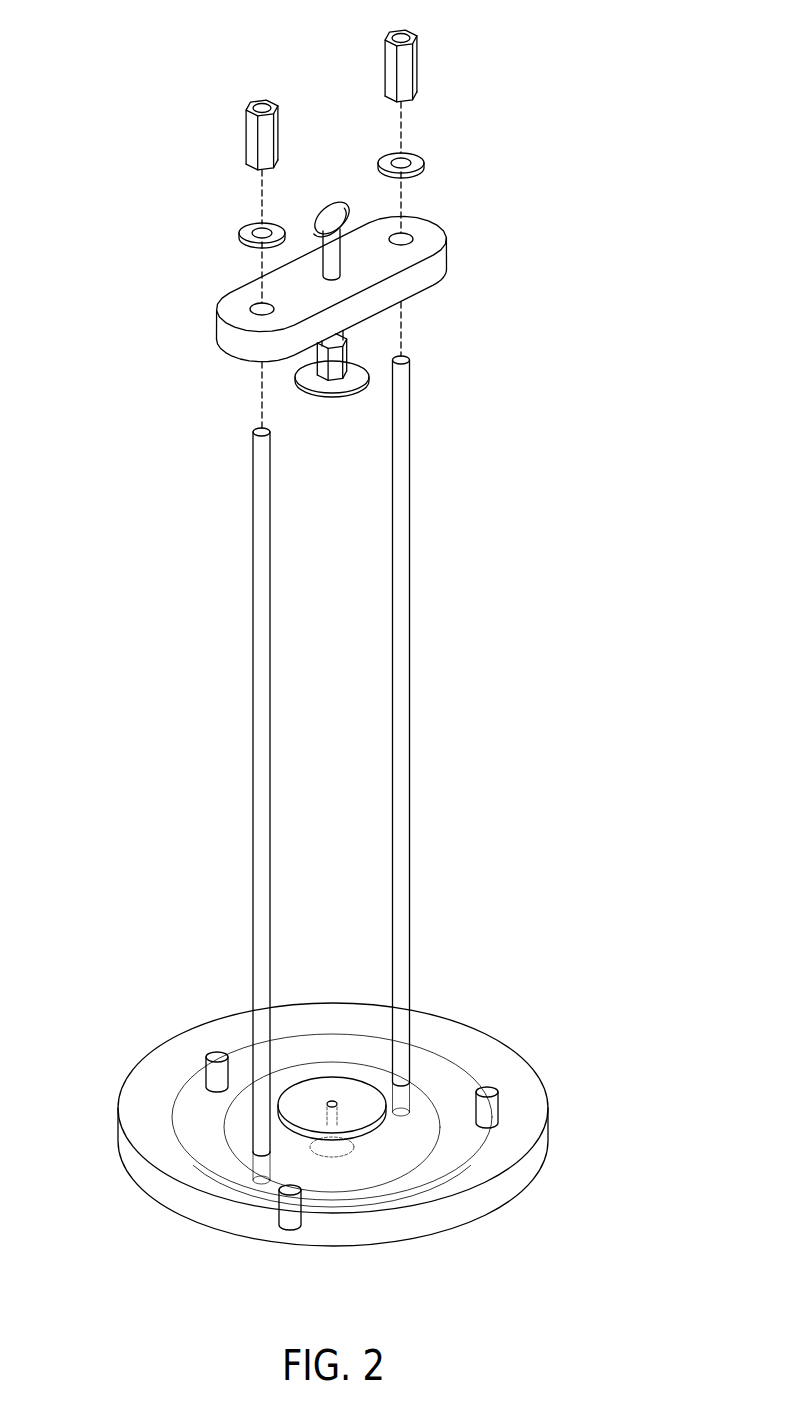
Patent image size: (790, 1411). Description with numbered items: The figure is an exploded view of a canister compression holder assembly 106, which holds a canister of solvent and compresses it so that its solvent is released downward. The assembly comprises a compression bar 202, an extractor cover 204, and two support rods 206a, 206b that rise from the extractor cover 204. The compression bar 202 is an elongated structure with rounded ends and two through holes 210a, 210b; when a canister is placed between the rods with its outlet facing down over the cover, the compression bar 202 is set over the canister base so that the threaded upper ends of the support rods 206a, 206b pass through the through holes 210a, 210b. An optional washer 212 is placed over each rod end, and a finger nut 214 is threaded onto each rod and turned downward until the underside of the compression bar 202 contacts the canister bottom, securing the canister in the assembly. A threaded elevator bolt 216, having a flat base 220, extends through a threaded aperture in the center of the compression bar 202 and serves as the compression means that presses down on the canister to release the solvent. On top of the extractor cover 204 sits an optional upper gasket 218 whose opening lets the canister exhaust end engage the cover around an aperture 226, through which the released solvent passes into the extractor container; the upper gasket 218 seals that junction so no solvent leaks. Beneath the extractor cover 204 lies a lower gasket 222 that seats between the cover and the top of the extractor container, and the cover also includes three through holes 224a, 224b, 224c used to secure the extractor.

The canister compression holder assembly 106 is at (103, 66).
The compression bar 202 is at (448, 246).
The extractor cover 204 is at (549, 1114).
The support rod 206a is at (253, 790).
The support rod 206b is at (410, 722).
The through hole 210a is at (258, 304).
The through hole 210b is at (405, 236).
The washer 212 is at (417, 163).
The finger nut 214 is at (398, 33).
The elevator bolt 216 is at (333, 205).
The upper gasket 218 is at (369, 1107).
The flat base 220 is at (342, 393).
The lower gasket 222 is at (465, 1170).
The through hole 224a is at (217, 1053).
The through hole 224b is at (489, 1088).
The through hole 224c is at (289, 1228).
The aperture 226 is at (333, 1157).